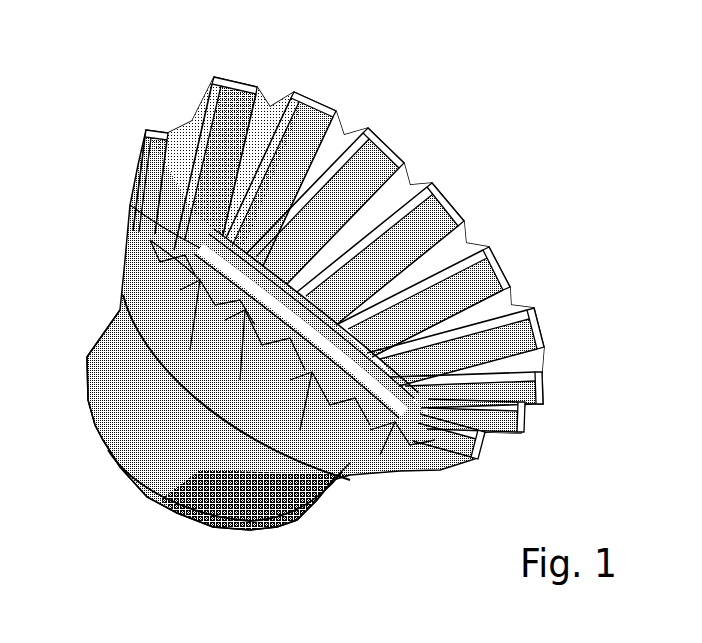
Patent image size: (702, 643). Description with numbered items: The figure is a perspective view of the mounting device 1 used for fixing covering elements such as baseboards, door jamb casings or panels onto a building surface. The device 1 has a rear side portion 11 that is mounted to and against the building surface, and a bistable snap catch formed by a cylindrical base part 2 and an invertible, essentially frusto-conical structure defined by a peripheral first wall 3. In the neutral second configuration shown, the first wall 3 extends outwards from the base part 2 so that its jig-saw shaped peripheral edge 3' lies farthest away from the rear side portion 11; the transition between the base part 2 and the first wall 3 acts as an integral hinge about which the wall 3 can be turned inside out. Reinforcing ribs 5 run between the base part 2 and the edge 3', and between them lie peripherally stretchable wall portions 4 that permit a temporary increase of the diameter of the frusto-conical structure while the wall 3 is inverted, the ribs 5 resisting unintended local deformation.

The mounting device 1 is at (98, 492).
The cylindrical base part 2 is at (315, 520).
The peripheral first wall 3 is at (466, 482).
The peripheral edge 3' is at (338, 158).
The peripherally stretchable wall portions 4 is at (436, 272).
The reinforcing ribs 5 is at (436, 228).
The rear side portion 11 is at (184, 522).